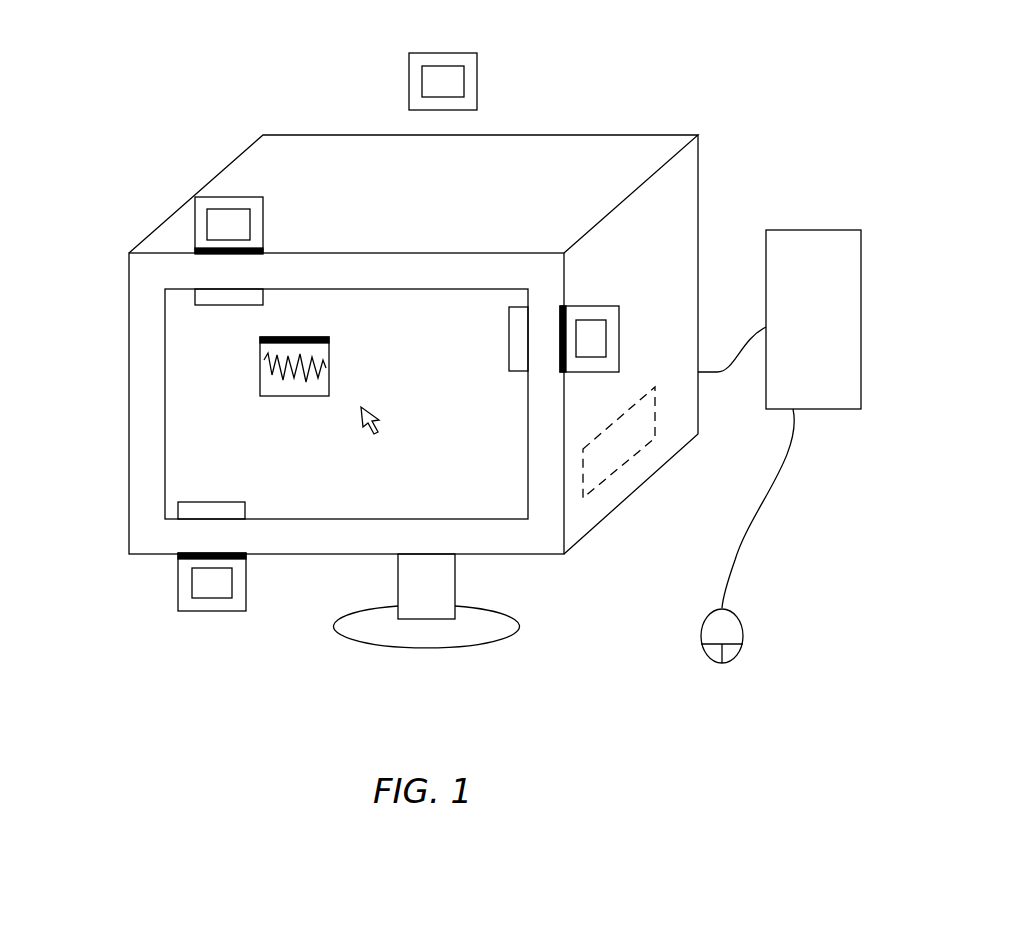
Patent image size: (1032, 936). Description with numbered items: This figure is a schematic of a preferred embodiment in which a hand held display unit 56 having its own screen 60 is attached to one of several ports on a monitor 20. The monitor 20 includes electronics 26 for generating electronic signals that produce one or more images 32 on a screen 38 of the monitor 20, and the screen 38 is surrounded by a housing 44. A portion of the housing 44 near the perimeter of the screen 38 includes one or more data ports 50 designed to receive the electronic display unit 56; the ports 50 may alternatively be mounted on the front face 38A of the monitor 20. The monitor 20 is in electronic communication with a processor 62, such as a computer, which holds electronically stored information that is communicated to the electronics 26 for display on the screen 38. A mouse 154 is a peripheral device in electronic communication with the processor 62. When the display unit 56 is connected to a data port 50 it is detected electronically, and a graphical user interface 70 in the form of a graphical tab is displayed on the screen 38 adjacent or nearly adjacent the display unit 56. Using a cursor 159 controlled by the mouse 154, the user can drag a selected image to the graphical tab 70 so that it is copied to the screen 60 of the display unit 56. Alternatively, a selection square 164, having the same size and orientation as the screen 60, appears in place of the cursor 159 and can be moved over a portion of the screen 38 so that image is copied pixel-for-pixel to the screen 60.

The monitor 20 is at (588, 562).
The electronics 26 is at (625, 447).
The images 32 is at (212, 460).
The screen 38 is at (278, 382).
The front face 38A is at (498, 543).
The housing 44 is at (129, 367).
The data ports 50 is at (203, 247).
The electronic display unit 56 is at (477, 60).
The screen 60 is at (452, 73).
The processor 62 is at (818, 409).
The graphical user interface 70 is at (213, 297).
The mouse 154 is at (728, 663).
The cursor 159 is at (381, 421).
The selection square 164 is at (300, 336).